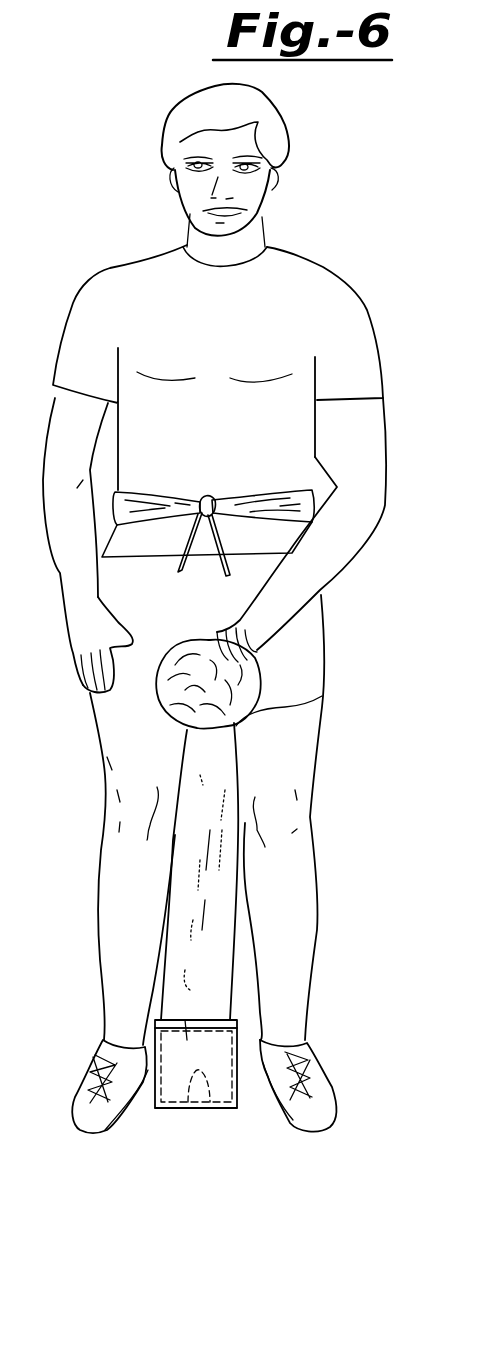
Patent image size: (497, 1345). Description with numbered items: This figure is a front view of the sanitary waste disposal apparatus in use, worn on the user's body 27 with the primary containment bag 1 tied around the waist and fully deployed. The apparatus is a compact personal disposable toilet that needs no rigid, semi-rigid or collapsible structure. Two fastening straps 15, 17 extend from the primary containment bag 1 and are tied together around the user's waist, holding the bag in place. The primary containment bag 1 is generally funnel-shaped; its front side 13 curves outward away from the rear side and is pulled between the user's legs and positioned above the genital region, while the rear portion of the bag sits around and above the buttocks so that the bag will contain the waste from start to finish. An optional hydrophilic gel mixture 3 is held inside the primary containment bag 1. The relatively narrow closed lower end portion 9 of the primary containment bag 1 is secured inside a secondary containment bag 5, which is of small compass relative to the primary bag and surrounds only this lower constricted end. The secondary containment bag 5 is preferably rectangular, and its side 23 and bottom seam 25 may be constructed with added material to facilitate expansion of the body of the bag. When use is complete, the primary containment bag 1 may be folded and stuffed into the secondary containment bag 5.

The primary containment bag 1 is at (203, 969).
The hydrophilic gel mixture 3 is at (212, 1112).
The secondary containment bag 5 is at (157, 1112).
The lower end portion 9 is at (233, 1078).
The front side 13 is at (258, 707).
The fastening strap 15 is at (242, 490).
The fastening strap 17 is at (163, 493).
The side of secondary containment bag 23 is at (187, 1040).
The bottom seam 25 is at (173, 1110).
The user's body 27 is at (330, 272).